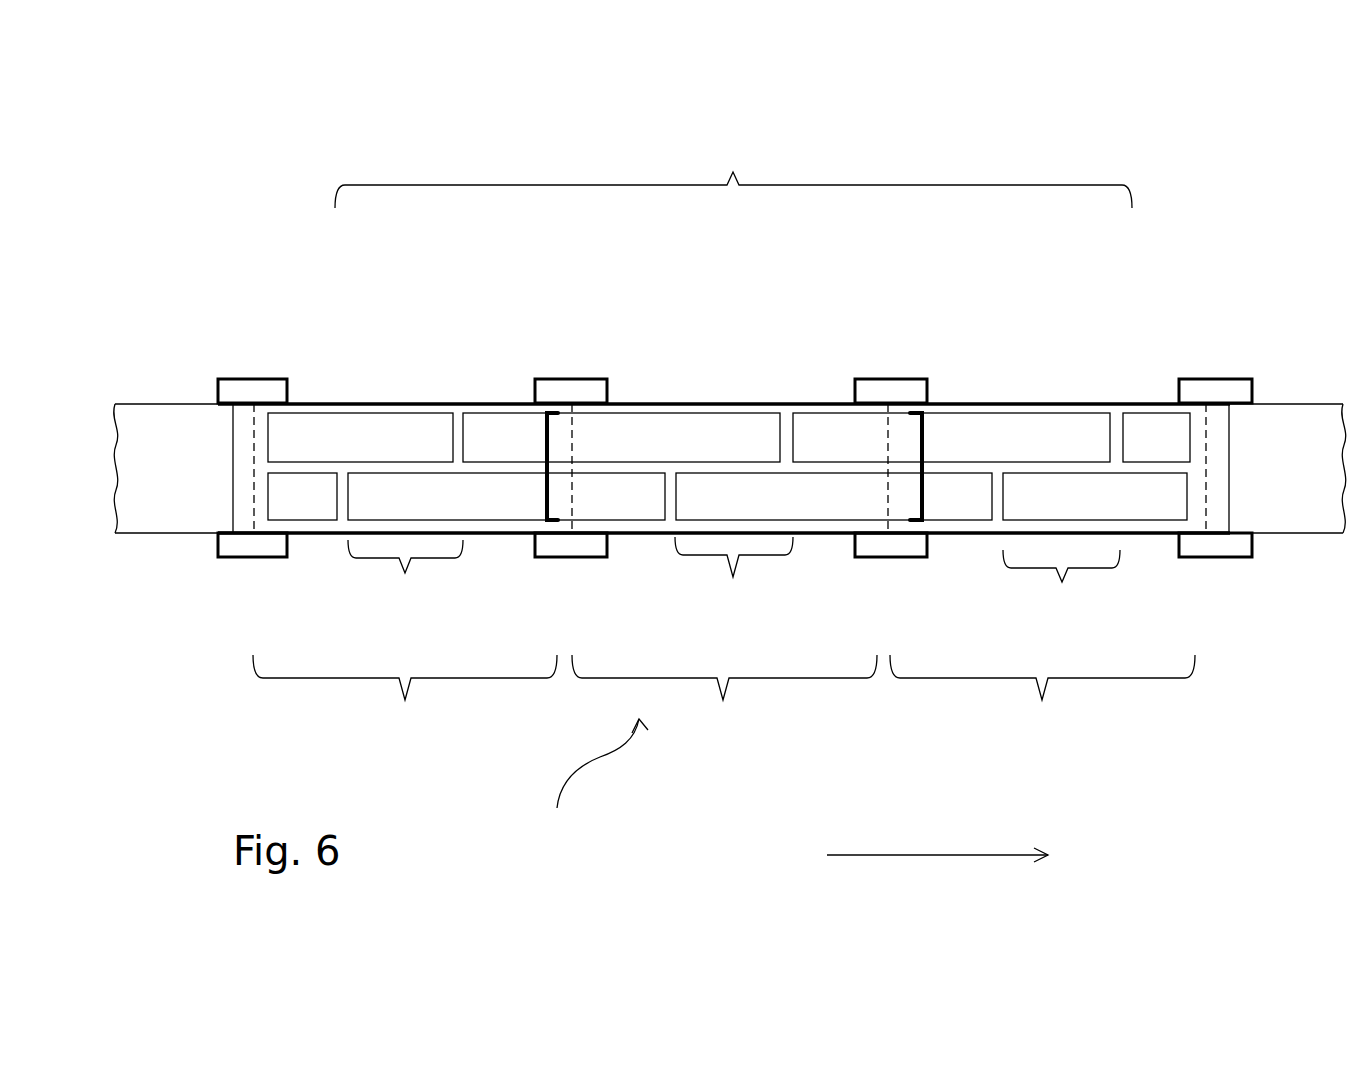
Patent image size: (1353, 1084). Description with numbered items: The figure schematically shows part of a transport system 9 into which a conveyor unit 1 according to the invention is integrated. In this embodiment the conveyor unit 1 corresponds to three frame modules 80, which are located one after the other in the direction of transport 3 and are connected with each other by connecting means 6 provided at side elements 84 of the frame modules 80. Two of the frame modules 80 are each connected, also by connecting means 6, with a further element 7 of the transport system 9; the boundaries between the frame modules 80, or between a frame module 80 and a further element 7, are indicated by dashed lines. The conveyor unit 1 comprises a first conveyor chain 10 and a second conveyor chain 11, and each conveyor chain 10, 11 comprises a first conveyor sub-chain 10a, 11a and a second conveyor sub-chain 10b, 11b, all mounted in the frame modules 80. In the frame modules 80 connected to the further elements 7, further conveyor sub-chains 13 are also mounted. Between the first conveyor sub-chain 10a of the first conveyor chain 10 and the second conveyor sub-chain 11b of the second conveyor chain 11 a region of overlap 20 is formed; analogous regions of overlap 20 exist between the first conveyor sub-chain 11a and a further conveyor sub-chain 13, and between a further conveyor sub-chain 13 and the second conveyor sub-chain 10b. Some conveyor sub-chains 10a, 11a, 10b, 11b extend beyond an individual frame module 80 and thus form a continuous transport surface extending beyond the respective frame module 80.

The conveyor unit 1 is at (733, 167).
The direction of transport 3 is at (908, 855).
The connecting means 6 is at (245, 390).
The further element 7 is at (180, 492).
The transport system 9 is at (598, 788).
The first conveyor chain 10 is at (540, 467).
The first conveyor sub-chain of the first conveyor chain 10a is at (632, 433).
The second conveyor sub-chain of the first conveyor chain 10b is at (622, 502).
The second conveyor chain 11 is at (925, 468).
The first conveyor sub-chain of the second conveyor chain 11a is at (818, 432).
The second conveyor sub-chain of the second conveyor chain 11b is at (817, 500).
The further conveyor sub-chain 13 is at (314, 430).
The region of overlap 20 is at (734, 581).
The frame module 80 is at (724, 699).
The side element 84 is at (385, 402).